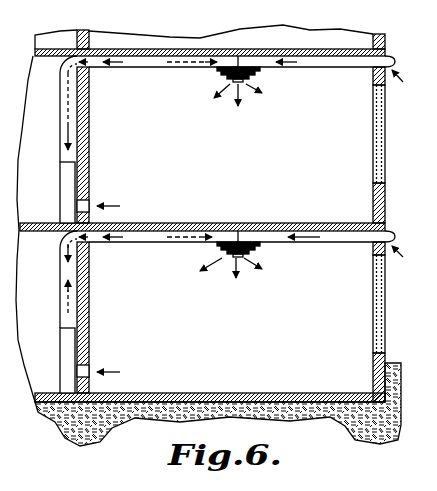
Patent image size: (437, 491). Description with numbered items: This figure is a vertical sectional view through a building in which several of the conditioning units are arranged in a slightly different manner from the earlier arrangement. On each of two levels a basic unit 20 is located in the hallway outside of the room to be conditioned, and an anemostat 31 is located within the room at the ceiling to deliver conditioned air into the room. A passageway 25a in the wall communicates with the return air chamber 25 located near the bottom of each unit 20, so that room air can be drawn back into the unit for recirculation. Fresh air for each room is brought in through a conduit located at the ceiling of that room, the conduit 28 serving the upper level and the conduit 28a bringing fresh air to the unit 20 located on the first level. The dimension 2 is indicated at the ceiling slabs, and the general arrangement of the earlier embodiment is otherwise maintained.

The floor 2 is at (25, 57).
The basic unit 20 is at (60, 181).
The return air chamber 25 is at (77, 208).
The passageway 25a is at (89, 201).
The supply pipe 28 is at (350, 67).
The conduit 28a is at (350, 242).
The anemostat 31 is at (249, 84).